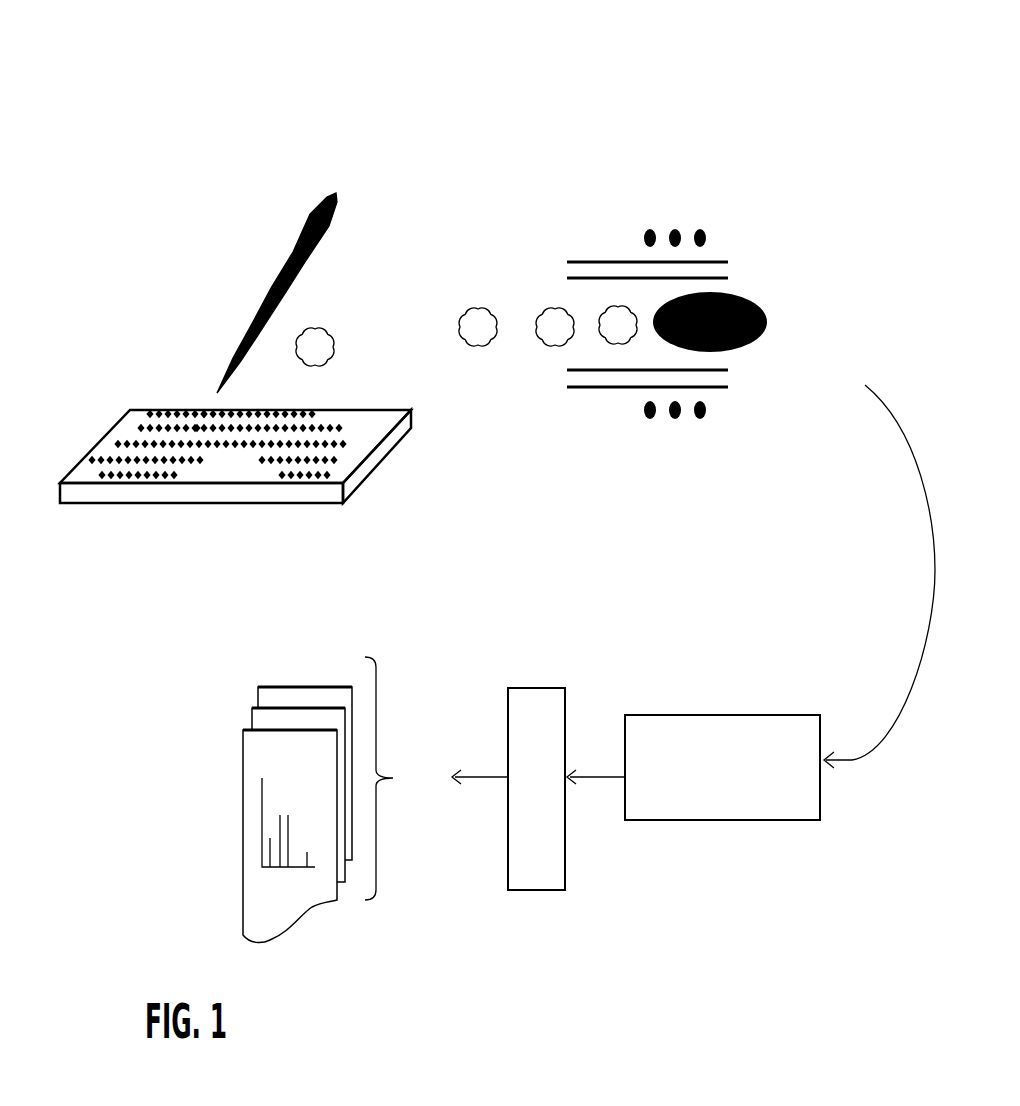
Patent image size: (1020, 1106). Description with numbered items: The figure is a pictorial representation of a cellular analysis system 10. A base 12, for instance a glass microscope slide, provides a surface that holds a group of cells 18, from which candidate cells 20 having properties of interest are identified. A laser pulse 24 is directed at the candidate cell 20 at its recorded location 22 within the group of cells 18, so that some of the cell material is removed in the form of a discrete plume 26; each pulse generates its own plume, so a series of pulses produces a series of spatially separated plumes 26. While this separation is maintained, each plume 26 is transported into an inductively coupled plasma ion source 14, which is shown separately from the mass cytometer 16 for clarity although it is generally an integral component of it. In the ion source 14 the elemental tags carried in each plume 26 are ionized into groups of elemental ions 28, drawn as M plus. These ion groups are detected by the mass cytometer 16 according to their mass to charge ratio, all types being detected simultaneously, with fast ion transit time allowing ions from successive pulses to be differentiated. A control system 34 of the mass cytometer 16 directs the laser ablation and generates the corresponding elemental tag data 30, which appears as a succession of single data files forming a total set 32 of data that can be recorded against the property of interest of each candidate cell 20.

The cellular analysis system 10 is at (577, 86).
The base 12 is at (375, 467).
The inductively coupled plasma (ICP) ion source 14 is at (741, 211).
The mass cytometer 16 is at (709, 786).
The group of cells 18 is at (330, 425).
The candidate cell 20 is at (197, 425).
The location 22 is at (198, 417).
The laser pulse 24 is at (317, 205).
The discrete plume 26 is at (323, 335).
The groups of elemental ions 28 is at (837, 302).
The elemental tag data 30 is at (293, 687).
The total set of data 32 is at (395, 778).
The control system 34 is at (527, 791).